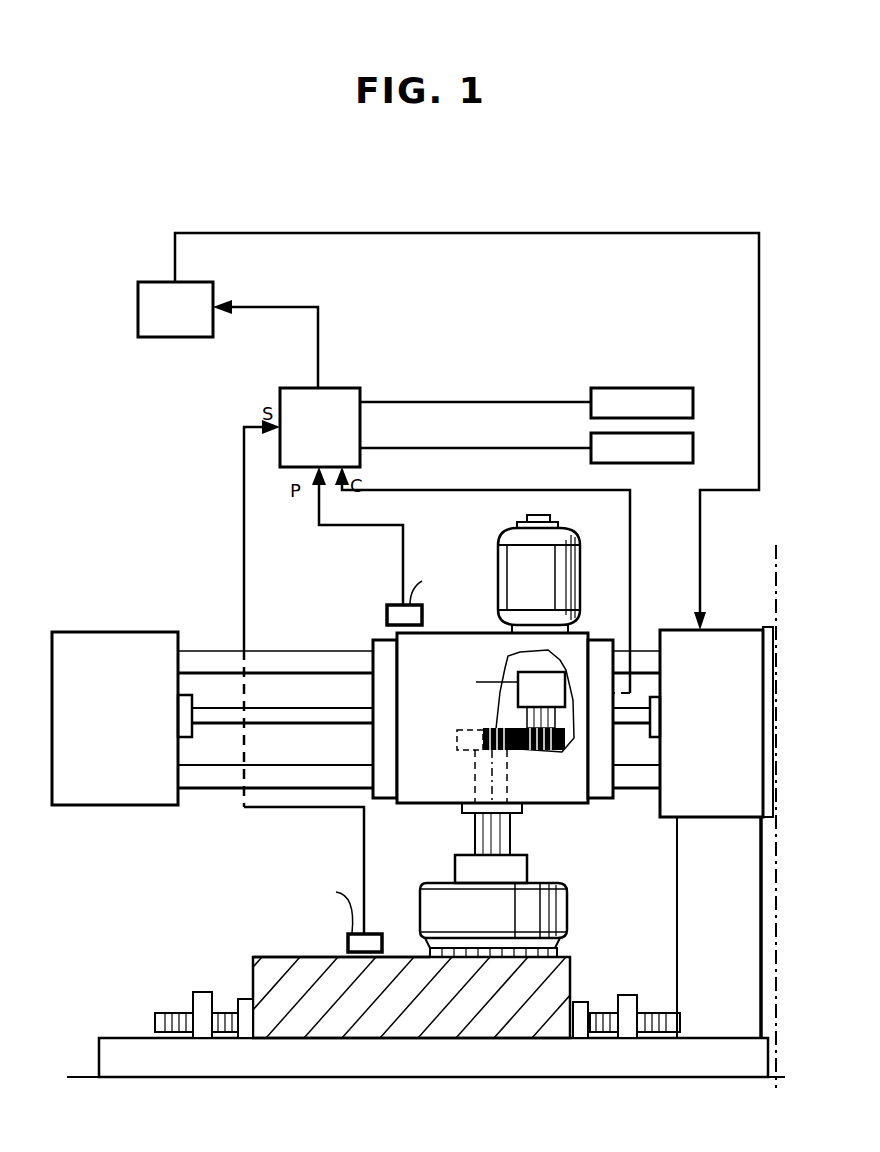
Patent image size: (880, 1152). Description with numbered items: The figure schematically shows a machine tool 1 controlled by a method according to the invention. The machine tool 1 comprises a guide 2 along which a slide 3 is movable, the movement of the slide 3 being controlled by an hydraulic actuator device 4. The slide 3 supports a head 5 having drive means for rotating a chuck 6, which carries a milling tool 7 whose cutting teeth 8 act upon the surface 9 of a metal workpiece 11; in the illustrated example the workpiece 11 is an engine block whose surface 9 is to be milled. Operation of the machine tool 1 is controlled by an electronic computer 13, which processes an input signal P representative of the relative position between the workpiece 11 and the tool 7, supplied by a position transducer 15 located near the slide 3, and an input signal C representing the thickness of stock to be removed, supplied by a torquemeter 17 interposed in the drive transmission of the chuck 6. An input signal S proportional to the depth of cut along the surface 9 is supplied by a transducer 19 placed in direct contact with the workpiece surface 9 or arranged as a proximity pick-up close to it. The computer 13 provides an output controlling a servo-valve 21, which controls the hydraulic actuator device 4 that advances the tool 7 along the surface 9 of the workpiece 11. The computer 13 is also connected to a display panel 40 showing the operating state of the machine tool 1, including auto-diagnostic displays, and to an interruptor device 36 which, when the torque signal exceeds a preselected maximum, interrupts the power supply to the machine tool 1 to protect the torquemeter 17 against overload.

The machine tool 1 is at (382, 818).
The guide 2 is at (318, 662).
The slide 3 is at (600, 666).
The hydraulic actuator device 4 is at (710, 660).
The head 5 is at (550, 664).
The chuck 6 is at (518, 870).
The milling tool 7 is at (548, 908).
The cutting teeth 8 is at (550, 952).
The surface 9 is at (330, 957).
The workpiece 11 is at (380, 1012).
The electronic computer 13 is at (344, 400).
The position transducer 15 is at (396, 605).
The torquemeter 17 is at (530, 688).
The transducer 19 is at (378, 934).
The servo-valve 21 is at (154, 290).
The interruptor device 36 is at (636, 402).
The display panel 40 is at (693, 448).